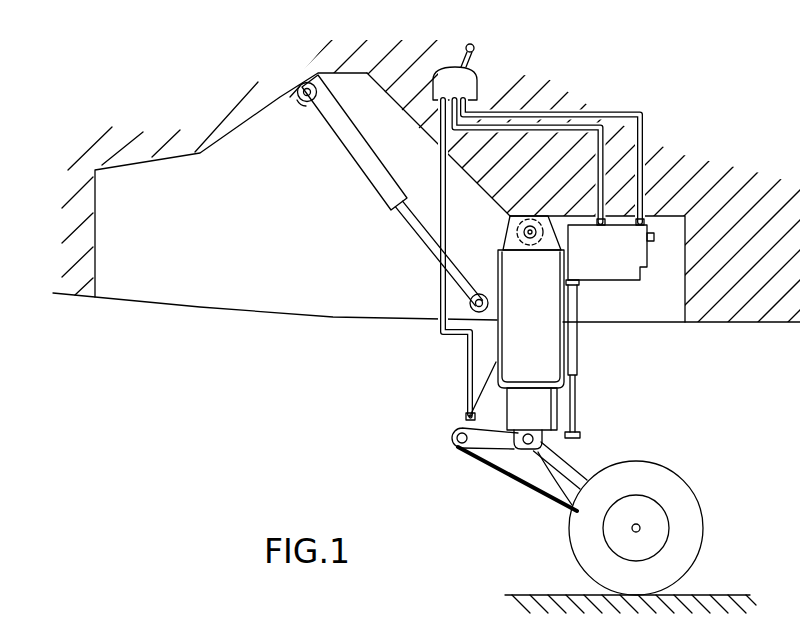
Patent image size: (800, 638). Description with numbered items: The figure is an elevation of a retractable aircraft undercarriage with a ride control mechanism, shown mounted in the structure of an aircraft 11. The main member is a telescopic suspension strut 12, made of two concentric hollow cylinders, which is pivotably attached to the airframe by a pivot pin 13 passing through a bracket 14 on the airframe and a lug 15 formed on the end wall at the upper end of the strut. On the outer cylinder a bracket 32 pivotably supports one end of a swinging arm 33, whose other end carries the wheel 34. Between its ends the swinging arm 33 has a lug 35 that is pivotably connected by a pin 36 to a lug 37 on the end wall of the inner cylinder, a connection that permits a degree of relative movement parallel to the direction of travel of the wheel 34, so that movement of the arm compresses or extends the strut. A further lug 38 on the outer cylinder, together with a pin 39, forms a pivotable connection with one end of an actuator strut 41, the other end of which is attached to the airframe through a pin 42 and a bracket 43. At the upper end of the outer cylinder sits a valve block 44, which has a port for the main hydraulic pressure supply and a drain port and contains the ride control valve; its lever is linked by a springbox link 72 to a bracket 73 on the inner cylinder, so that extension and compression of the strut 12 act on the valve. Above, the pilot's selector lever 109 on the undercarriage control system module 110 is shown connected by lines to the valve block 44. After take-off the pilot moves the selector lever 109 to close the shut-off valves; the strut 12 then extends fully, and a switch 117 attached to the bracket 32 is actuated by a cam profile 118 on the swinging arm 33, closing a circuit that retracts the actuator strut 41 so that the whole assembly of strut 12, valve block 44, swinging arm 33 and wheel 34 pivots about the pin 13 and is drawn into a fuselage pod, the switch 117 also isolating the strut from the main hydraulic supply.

The aircraft 11 is at (720, 238).
The telescopic suspension strut 12 is at (522, 341).
The pivot pin 13 is at (546, 214).
The bracket 14 is at (505, 222).
The lug 15 is at (513, 244).
The bracket 32 is at (482, 395).
The swinging arm 33 is at (530, 478).
The wheel 34 is at (704, 532).
The lug 35 is at (557, 498).
The pin 36 is at (547, 444).
The lug 37 is at (505, 472).
The lug 38 is at (466, 327).
The pin 39 is at (470, 303).
The actuator strut 41 is at (380, 184).
The pin 42 is at (309, 104).
The bracket 43 is at (284, 108).
The valve block 44 is at (603, 260).
The springbox link 72 is at (580, 337).
The bracket 73 is at (580, 434).
The selector lever 109 is at (466, 45).
The undercarriage control system module 110 is at (481, 78).
The switch 117 is at (465, 414).
The cam profile 118 is at (452, 437).